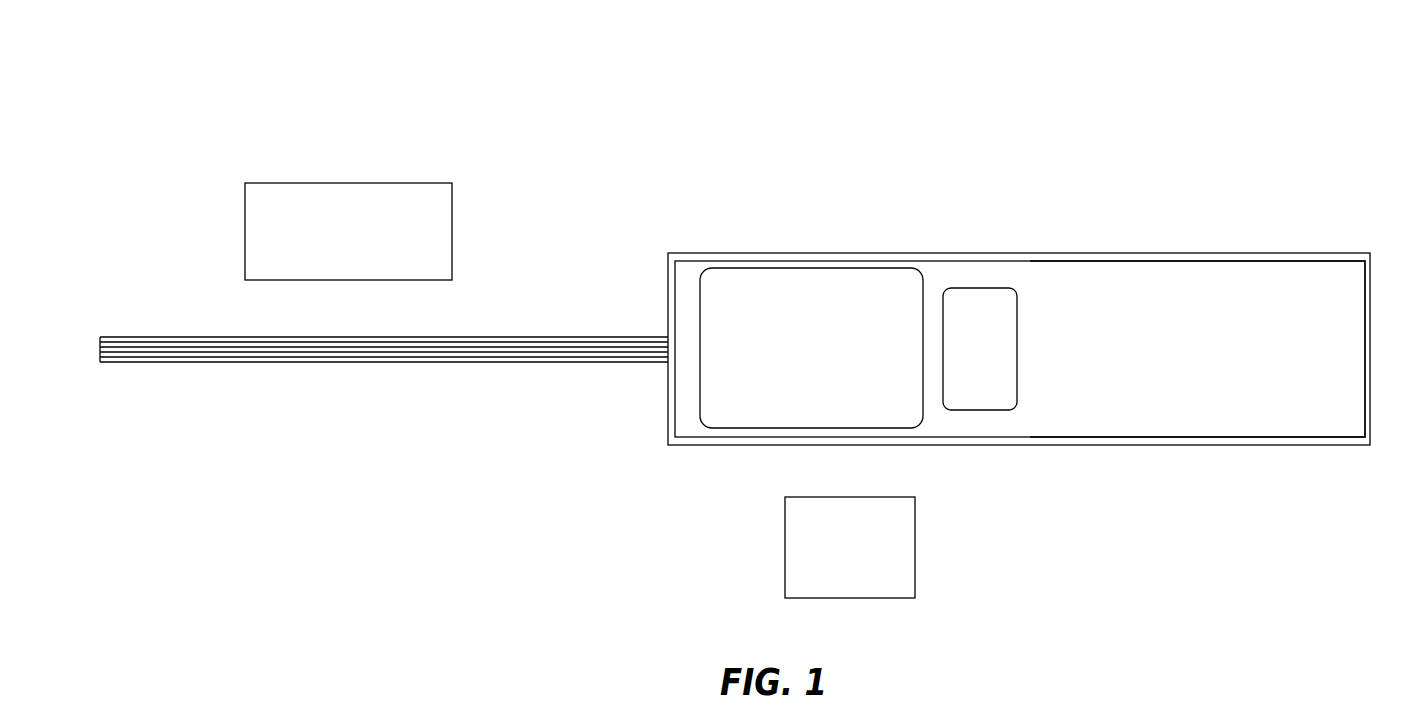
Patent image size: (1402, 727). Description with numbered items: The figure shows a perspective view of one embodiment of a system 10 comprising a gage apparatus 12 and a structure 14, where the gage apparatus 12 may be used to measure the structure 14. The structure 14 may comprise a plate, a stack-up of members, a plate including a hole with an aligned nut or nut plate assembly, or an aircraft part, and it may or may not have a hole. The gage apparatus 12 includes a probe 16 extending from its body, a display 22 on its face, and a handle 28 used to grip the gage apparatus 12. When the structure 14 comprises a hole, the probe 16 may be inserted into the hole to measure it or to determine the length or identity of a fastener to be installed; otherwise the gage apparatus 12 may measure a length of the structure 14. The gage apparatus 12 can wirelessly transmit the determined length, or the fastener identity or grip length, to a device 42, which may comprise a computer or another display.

The system 10 is at (950, 70).
The gage apparatus 12 is at (1045, 213).
The structure 14 is at (433, 223).
The probe 16 is at (328, 362).
The display 22 is at (798, 295).
The handle 28 is at (1113, 417).
The device 42 is at (898, 539).